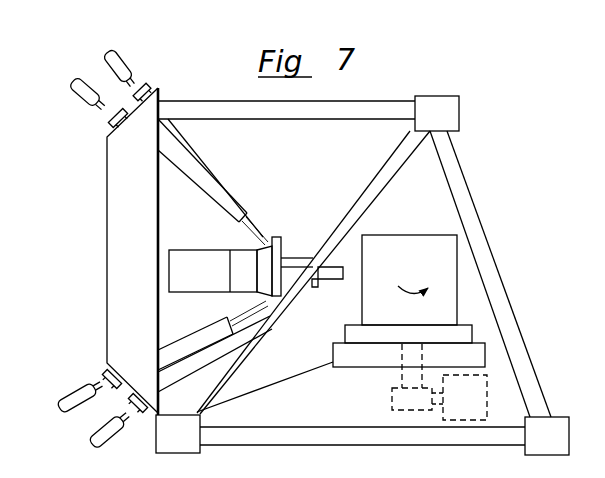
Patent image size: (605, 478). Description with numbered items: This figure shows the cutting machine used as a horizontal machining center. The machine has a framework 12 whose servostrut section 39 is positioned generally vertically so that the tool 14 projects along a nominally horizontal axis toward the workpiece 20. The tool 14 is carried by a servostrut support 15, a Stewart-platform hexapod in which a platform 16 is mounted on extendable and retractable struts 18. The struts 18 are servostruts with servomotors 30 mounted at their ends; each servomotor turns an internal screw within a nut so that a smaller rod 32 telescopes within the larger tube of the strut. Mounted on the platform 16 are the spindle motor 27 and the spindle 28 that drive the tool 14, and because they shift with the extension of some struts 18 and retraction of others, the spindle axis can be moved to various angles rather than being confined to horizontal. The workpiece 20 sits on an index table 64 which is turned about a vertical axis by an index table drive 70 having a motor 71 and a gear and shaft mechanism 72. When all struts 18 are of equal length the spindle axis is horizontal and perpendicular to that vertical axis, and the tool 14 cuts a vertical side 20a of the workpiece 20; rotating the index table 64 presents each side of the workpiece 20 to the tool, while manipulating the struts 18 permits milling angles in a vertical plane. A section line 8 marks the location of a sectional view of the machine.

The section line 8- 8 is at (76, 248).
The framework 12 is at (496, 229).
The tool 14 is at (334, 281).
The servostrut support 15 is at (263, 197).
The platform 16 is at (279, 237).
The struts 18 is at (198, 155).
The workpiece 20 is at (390, 243).
The vertical side of the workpiece 20a is at (412, 281).
The motor 27 is at (201, 256).
The spindle 28 is at (288, 261).
The servomotors 30 is at (132, 66).
The rod 32 is at (370, 452).
The servostrut section 39 is at (107, 270).
The index table 64 is at (487, 353).
The index table drive 70 is at (389, 396).
The motor 71 is at (475, 407).
The gear and shaft mechanism 72 is at (400, 381).